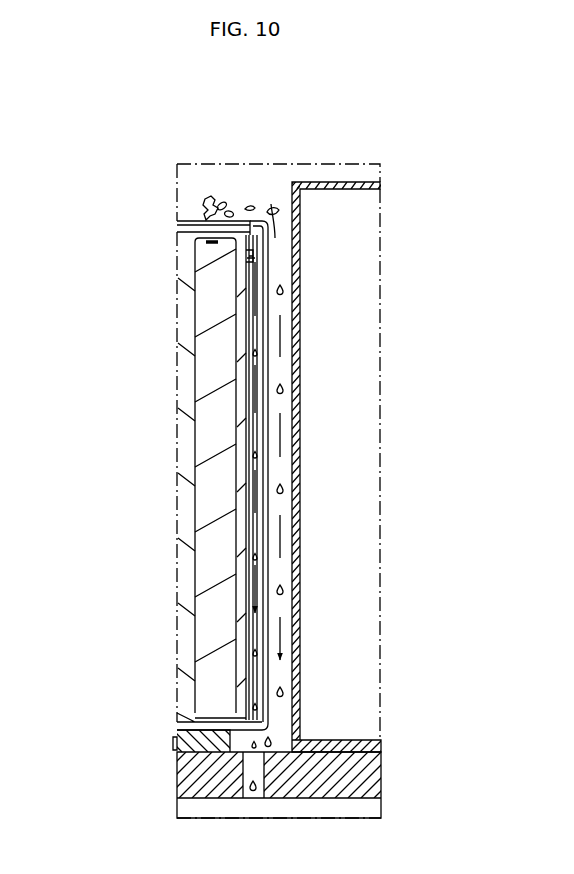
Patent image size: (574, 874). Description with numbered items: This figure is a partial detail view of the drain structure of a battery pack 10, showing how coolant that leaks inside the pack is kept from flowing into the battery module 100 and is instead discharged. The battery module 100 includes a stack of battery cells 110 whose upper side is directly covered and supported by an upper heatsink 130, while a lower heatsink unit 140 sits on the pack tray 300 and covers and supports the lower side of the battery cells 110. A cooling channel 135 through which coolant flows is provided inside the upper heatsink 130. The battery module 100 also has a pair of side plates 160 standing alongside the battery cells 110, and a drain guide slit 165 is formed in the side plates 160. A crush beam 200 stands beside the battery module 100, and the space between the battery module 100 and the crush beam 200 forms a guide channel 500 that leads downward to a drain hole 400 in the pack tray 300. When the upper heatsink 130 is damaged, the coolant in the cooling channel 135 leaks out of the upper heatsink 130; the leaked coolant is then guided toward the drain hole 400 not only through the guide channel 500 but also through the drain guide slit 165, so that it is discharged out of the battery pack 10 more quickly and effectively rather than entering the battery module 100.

The battery pack 10 is at (170, 142).
The battery module 100 is at (172, 376).
The battery cell 110 is at (213, 434).
The upper heatsink 130 is at (173, 213).
The cooling channel 135 is at (183, 212).
The lower heatsink unit 140 is at (173, 728).
The side plate 160 is at (258, 322).
The drain guide slit 165 is at (250, 276).
The crush beam 200 is at (355, 182).
The pack tray 300 is at (200, 777).
The drain hole 400 is at (262, 800).
The guide channel 500 is at (286, 251).